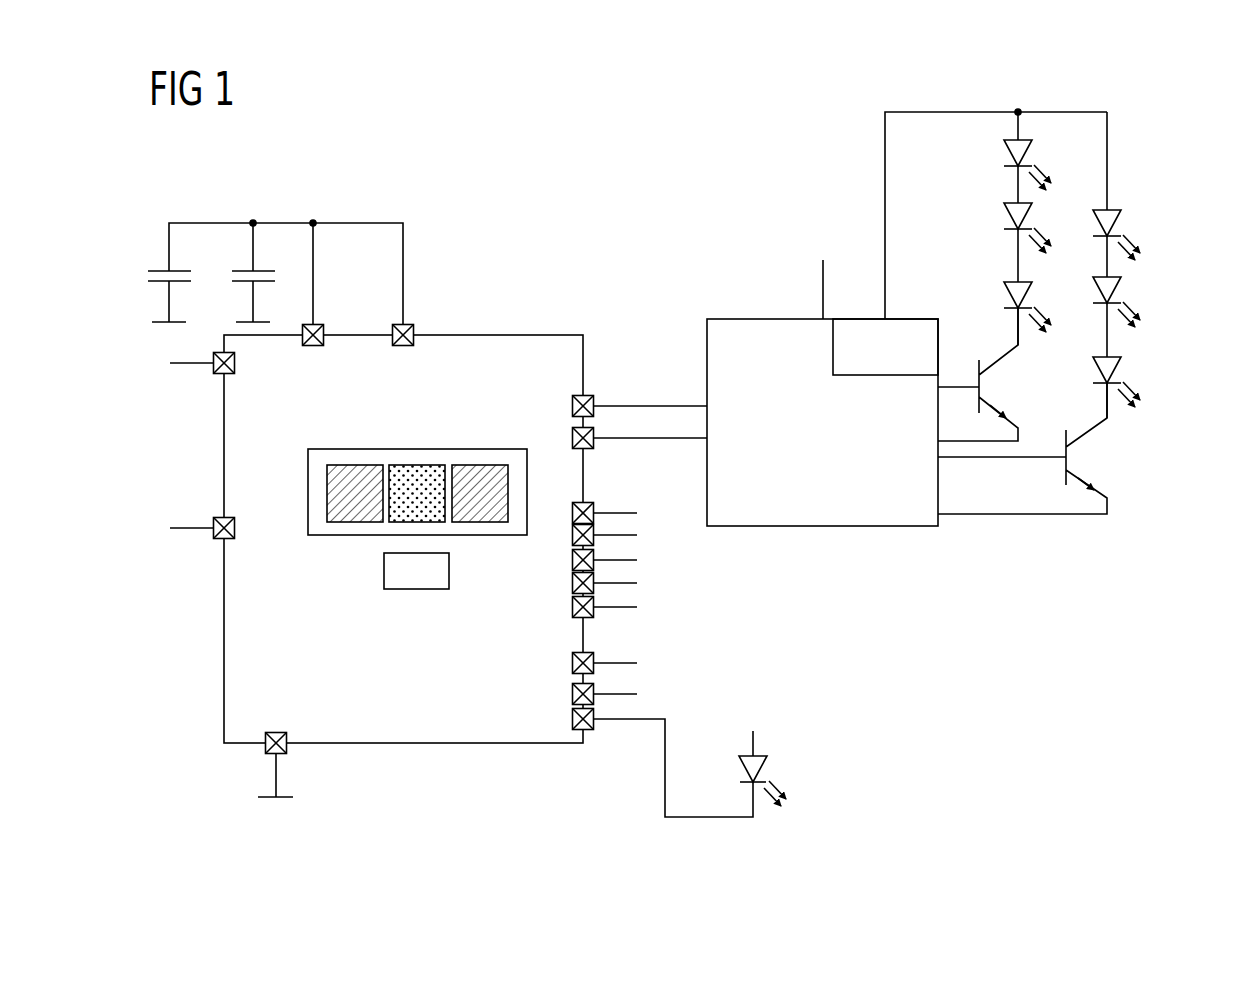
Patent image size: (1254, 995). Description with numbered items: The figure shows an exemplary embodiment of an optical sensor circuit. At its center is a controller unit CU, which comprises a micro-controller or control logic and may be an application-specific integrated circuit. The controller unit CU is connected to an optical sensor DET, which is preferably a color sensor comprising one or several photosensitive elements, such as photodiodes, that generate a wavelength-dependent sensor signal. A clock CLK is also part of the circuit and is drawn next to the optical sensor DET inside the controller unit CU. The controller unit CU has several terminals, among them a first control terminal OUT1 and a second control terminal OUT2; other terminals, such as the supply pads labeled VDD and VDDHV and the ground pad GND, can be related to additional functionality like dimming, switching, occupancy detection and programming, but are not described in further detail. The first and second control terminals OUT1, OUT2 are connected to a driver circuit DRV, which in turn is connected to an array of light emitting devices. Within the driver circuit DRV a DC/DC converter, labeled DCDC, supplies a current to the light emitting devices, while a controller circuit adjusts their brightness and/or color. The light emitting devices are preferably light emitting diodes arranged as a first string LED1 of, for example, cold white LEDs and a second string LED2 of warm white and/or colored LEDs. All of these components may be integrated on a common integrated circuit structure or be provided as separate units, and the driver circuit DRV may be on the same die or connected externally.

The controller unit CU is at (443, 745).
The supply voltage VDD is at (545, 557).
The high supply voltage VDDHV is at (446, 321).
The ground GND is at (297, 765).
The first control terminal OUT1 is at (592, 398).
The second control terminal OUT2 is at (592, 447).
The optical sensor DET is at (416, 449).
The clock CLK is at (416, 571).
The driver circuit DRV is at (823, 528).
The DC-DC converter DCDC is at (970, 243).
The first string LED1 is at (988, 148).
The second string LED2 is at (1134, 198).